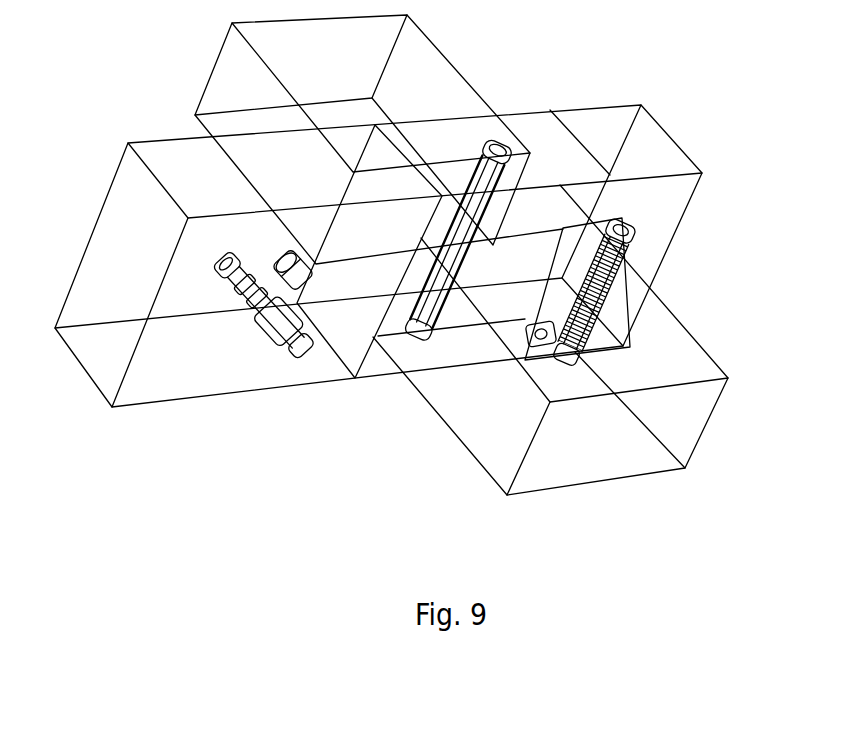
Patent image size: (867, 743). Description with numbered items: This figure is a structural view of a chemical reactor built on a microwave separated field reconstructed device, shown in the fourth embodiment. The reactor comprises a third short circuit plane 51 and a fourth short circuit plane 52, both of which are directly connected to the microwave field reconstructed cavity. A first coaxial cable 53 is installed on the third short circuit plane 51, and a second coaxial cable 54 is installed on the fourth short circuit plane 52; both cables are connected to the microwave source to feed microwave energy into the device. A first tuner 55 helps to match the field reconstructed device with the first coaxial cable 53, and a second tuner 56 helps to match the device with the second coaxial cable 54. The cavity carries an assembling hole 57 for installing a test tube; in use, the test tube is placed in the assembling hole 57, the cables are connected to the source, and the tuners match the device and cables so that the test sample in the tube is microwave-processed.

The third short circuit plane 51 is at (633, 480).
The fourth short circuit plane 52 is at (173, 367).
The first coaxial cable 53 is at (638, 250).
The second coaxial cable 54 is at (268, 345).
The first tuner 55 is at (543, 347).
The second tuner 56 is at (302, 285).
The assembling hole 57 is at (500, 143).